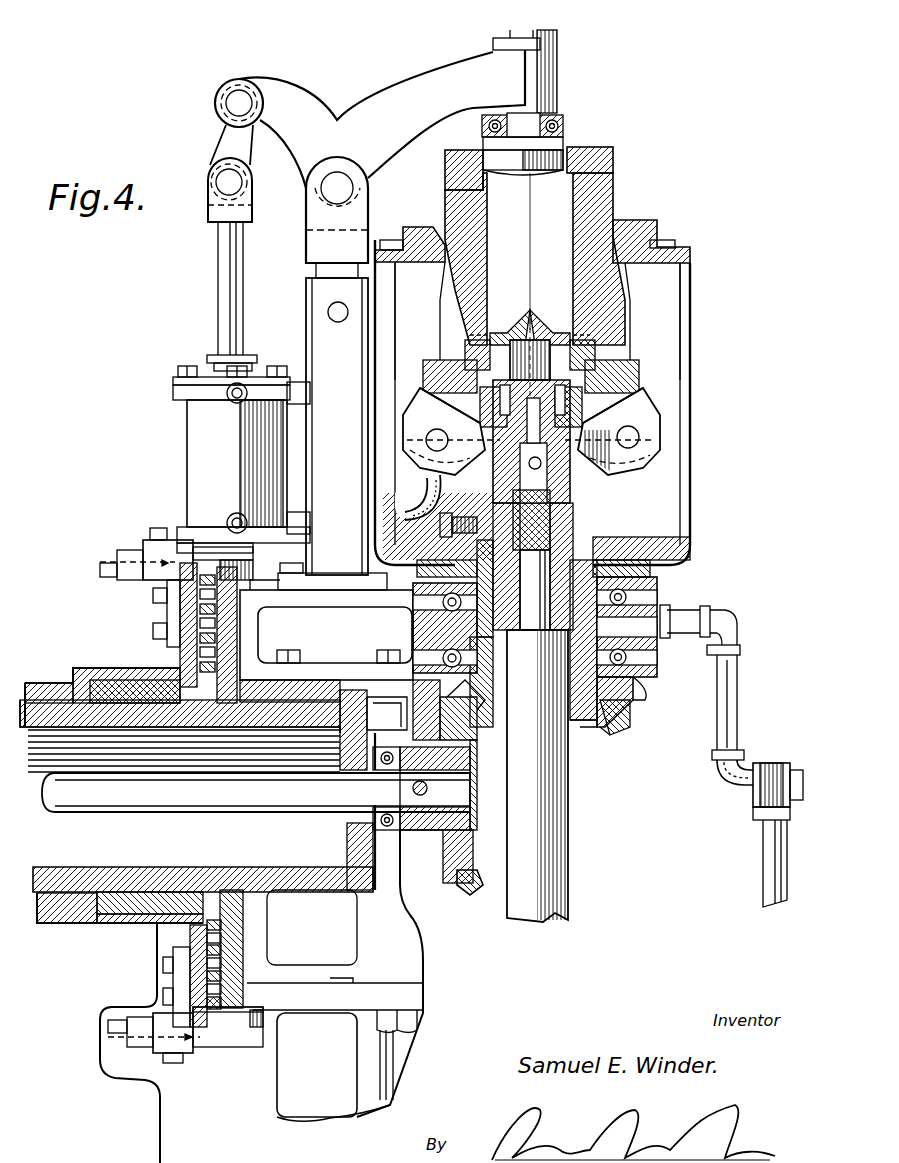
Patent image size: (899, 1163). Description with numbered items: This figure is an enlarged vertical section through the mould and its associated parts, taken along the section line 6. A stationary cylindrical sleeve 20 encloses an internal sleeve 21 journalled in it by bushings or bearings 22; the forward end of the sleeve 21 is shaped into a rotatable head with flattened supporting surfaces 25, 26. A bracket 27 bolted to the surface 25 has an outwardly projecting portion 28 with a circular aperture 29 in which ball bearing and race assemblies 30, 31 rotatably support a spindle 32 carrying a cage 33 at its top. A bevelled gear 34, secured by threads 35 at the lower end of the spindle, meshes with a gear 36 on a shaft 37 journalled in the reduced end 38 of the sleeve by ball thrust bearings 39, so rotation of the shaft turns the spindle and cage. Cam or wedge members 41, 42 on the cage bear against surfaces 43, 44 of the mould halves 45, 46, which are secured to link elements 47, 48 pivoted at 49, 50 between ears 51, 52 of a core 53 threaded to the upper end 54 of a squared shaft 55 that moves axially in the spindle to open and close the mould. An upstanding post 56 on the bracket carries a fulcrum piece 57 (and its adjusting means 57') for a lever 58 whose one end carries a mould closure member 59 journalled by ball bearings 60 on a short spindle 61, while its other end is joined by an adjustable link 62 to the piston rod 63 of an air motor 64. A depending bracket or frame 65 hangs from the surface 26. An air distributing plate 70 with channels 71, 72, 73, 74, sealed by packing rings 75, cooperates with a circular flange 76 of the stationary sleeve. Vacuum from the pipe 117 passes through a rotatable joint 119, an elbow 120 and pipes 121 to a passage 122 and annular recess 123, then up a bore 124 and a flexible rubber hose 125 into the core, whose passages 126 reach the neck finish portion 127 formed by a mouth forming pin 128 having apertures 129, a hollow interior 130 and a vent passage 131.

The section line 6 is at (100, 553).
The cylindrical sleeve 20 is at (58, 925).
The internal sleeve 21 is at (46, 690).
The bushings or bearings 22 is at (104, 668).
The flattened supporting surface 25 is at (300, 680).
The lower supporting surface 26 is at (318, 985).
The bracket 27 is at (326, 630).
The outwardly projecting portion 28 is at (668, 595).
The circular aperture 29 is at (633, 692).
The ball bearing and race assembly 30 is at (650, 680).
The ball bearing and race assembly 31 is at (660, 585).
The spindle 32 is at (620, 707).
The cage 33 is at (690, 505).
The bevelled gear 34 is at (612, 730).
The threads 35 is at (582, 727).
The gear 36 is at (470, 875).
The shaft 37 is at (318, 795).
The reduced end 38 is at (184, 751).
The ball thrust bearings 39 is at (410, 832).
The cam or wedge member 41 is at (640, 228).
The cam or wedge member 42 is at (425, 228).
The surface 43 is at (652, 321).
The surface 44 is at (420, 321).
The mould half 45 is at (592, 240).
The mould half 46 is at (488, 262).
The link element 47 is at (650, 405).
The link element 48 is at (420, 398).
The pivot 49 is at (640, 437).
The pivot 50 is at (426, 440).
The ears 51 is at (650, 490).
The ears 52 is at (438, 525).
The core 53 is at (585, 545).
The upper end 54 is at (566, 512).
The squared shaft 55 is at (560, 875).
The upstanding post 56 is at (316, 556).
The fulcrum piece 57 is at (318, 217).
The pivot bar 57' is at (319, 426).
The lever 58 is at (307, 113).
The mould closure member 59 is at (500, 155).
The ball bearings 60 is at (560, 114).
The short spindle 61 is at (548, 105).
The adjustable link 62 is at (225, 138).
The piston rod 63 is at (216, 302).
The air motor 64 is at (200, 433).
The depending bracket or frame 65 is at (316, 1105).
The air distributing plate 70 is at (200, 655).
The circumferential groove or channel 71 is at (222, 938).
The circumferential groove or channel 72 is at (222, 963).
The circumferential groove or channel 73 is at (223, 983).
The circumferential groove or channel 74 is at (222, 1025).
The packing rings 75 is at (200, 930).
The circular flange 76 is at (160, 598).
The vacuum pipe 117 is at (770, 882).
The rotatable joint 119 is at (770, 765).
The elbow 120 is at (735, 790).
The pipes 121 is at (738, 672).
The passage 122 is at (672, 610).
The annular recess 123 is at (445, 630).
The bore 124 is at (385, 573).
The flexible rubber hose 125 is at (395, 480).
The passages 126 is at (453, 433).
The neck finish portion 127 is at (465, 345).
The mouth forming pin 128 is at (514, 326).
The apertures 129 is at (545, 325).
The hollow interior 130 is at (600, 345).
The vent passage 131 is at (610, 433).